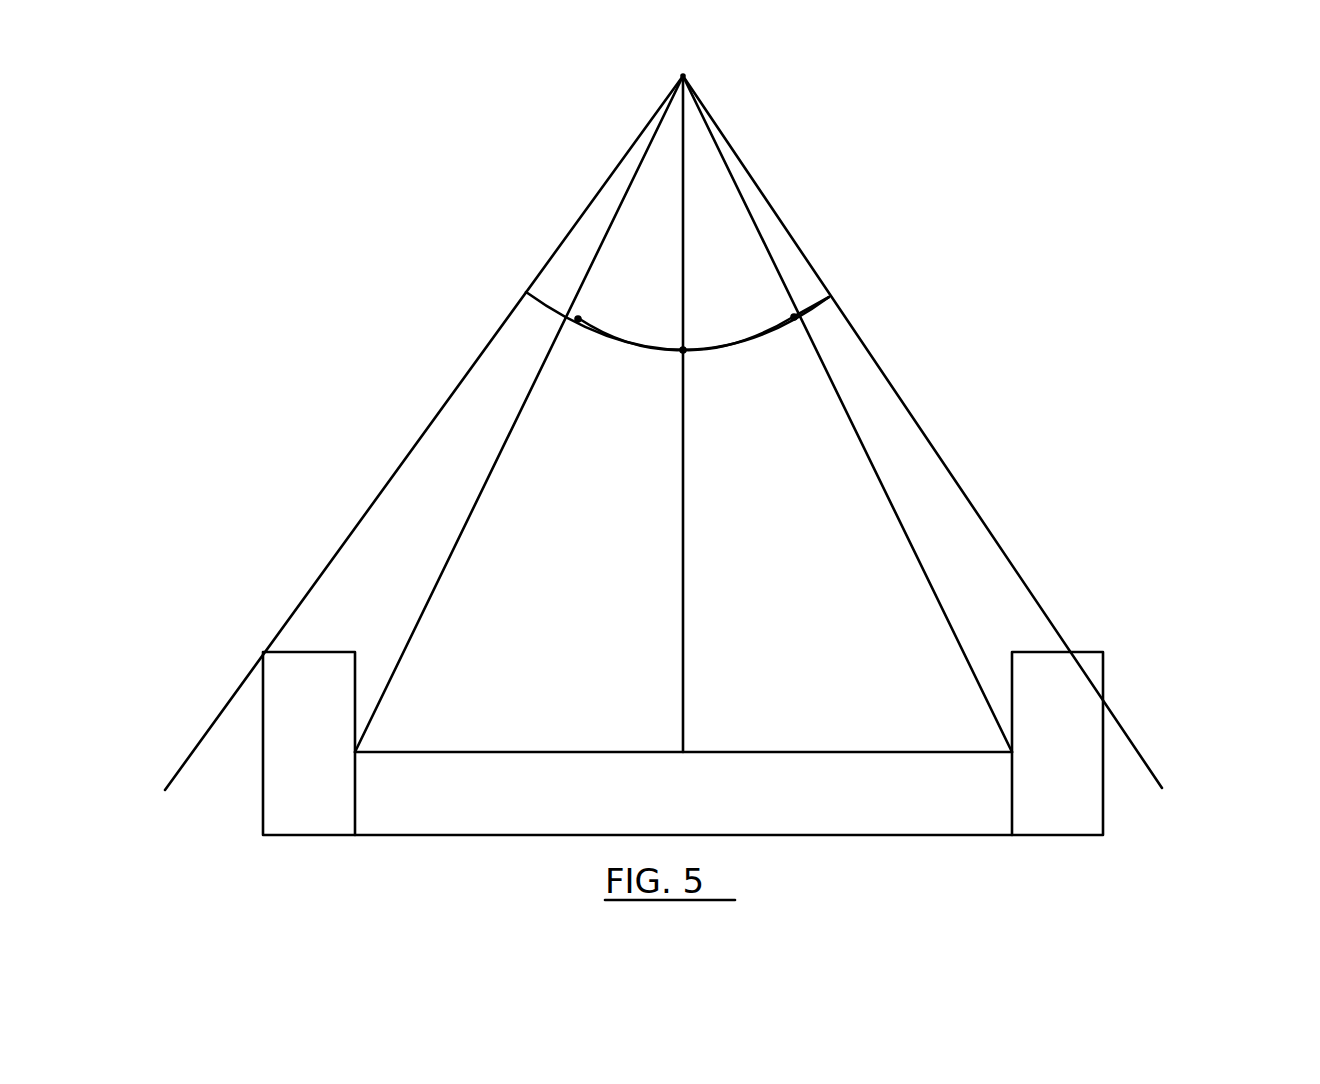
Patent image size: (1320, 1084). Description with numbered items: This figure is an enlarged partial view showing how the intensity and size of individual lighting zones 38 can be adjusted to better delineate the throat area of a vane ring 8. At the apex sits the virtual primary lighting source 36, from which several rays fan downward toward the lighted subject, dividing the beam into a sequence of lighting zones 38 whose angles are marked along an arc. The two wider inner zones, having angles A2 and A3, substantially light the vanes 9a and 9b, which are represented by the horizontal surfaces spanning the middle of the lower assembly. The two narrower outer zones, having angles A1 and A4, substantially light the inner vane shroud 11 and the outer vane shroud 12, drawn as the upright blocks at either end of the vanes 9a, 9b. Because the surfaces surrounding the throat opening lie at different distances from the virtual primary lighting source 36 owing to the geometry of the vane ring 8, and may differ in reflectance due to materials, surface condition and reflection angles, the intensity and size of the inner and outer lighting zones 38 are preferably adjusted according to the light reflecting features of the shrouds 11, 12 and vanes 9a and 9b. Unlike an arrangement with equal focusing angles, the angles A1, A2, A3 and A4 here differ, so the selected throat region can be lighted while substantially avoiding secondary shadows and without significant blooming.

The vane ring 8 is at (1188, 765).
The virtual primary lighting source 36 is at (683, 76).
The lighting zone 38 is at (490, 385).
The outer vane shroud 12 is at (263, 715).
The inner vane shroud 11 is at (1103, 680).
The stator vane 9a is at (832, 752).
The stator vane 9b is at (857, 838).
The angle of outer lighting zone A1 is at (676, 321).
The angle of inner lighting zone A2 is at (630, 347).
The angle of inner lighting zone A3 is at (738, 346).
The angle of outer lighting zone A4 is at (821, 326).